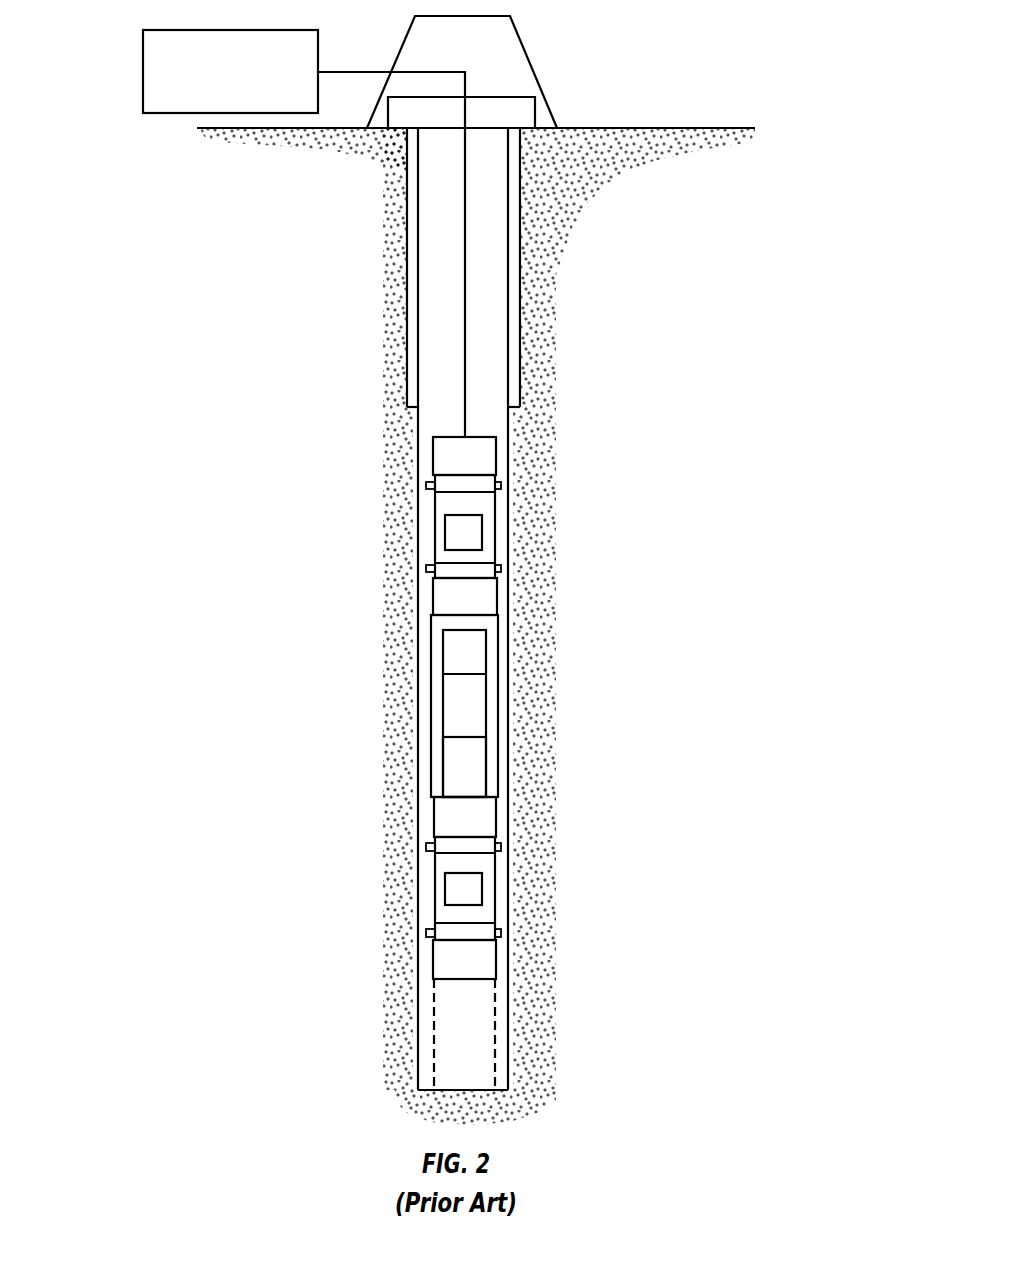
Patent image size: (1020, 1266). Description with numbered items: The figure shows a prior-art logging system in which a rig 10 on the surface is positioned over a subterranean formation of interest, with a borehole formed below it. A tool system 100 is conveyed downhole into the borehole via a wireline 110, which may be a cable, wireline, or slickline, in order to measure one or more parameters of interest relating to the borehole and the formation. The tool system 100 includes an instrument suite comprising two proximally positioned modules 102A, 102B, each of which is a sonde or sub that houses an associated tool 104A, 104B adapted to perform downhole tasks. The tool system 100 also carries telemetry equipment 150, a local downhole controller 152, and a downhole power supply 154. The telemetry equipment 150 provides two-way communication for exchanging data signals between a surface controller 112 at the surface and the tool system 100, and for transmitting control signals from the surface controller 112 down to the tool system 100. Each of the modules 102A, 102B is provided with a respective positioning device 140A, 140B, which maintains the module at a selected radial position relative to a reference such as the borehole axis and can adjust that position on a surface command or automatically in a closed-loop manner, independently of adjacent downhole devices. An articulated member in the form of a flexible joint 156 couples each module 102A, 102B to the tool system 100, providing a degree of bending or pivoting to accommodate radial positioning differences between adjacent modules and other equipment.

The rig 10 is at (548, 66).
The tool system 100 is at (535, 761).
The module 102A is at (459, 505).
The module 102B is at (459, 865).
The tool 104A is at (376, 516).
The tool 104B is at (376, 871).
The wireline 110 is at (483, 254).
The surface controller 112 is at (202, 98).
The positioning device 140A is at (380, 502).
The positioning device 140B is at (380, 864).
The telemetry equipment 150 is at (531, 706).
The downhole controller 152 is at (537, 713).
The downhole power supply 154 is at (537, 767).
The flexible joint 156 is at (536, 707).